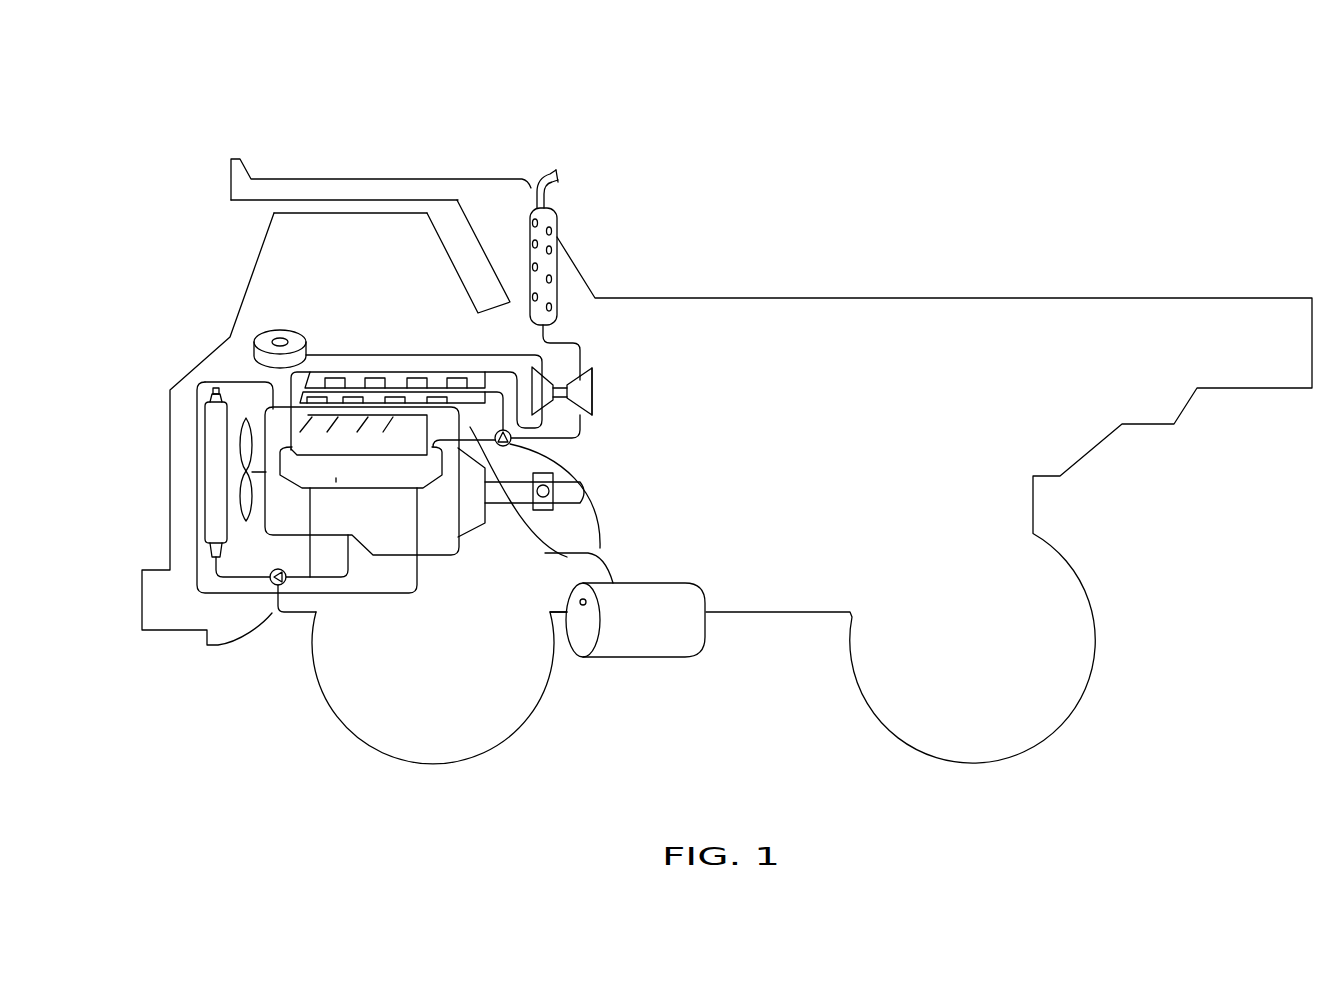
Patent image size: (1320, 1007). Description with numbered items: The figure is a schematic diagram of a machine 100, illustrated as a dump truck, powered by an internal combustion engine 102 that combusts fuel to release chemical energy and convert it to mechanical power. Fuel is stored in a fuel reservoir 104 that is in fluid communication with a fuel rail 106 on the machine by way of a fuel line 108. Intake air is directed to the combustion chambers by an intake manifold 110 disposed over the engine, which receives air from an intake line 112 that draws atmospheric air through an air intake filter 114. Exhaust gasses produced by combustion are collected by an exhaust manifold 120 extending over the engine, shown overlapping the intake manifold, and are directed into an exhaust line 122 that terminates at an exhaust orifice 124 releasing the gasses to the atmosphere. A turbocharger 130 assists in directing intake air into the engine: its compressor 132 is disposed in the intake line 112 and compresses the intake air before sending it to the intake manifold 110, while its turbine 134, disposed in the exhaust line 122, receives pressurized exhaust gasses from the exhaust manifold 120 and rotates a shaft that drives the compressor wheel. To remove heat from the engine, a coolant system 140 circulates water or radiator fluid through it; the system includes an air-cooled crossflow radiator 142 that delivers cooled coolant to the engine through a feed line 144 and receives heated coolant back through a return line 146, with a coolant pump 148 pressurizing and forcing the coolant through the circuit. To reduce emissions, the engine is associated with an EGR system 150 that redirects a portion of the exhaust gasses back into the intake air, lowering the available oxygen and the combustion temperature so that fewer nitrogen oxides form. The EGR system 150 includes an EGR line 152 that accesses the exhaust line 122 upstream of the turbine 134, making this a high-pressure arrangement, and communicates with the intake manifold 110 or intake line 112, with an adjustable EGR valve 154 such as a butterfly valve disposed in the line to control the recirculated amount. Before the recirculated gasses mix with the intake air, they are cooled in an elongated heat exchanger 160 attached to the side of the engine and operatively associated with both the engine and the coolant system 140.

The machine 100 is at (270, 136).
The internal combustion engine 102 is at (396, 537).
The fuel reservoir 104 is at (667, 640).
The fuel rail 106 is at (427, 540).
The fuel line 108 is at (563, 553).
The intake manifold 110 is at (397, 370).
The intake line 112 is at (362, 355).
The air intake filter 114 is at (255, 342).
The exhaust manifold 120 is at (480, 395).
The exhaust line 122 is at (584, 441).
The exhaust orifice 124 is at (560, 175).
The turbocharger 130 is at (623, 395).
The compressor 132 is at (540, 392).
The turbine 134 is at (593, 382).
The coolant system 140 is at (168, 461).
The radiator 142 is at (215, 495).
The feed line 144 is at (217, 390).
The return line 146 is at (242, 577).
The coolant pump 148 is at (277, 613).
The EGR system 150 is at (473, 472).
The EGR line 152 is at (292, 425).
The EGR valve 154 is at (580, 445).
The heat exchanger 160 is at (338, 478).